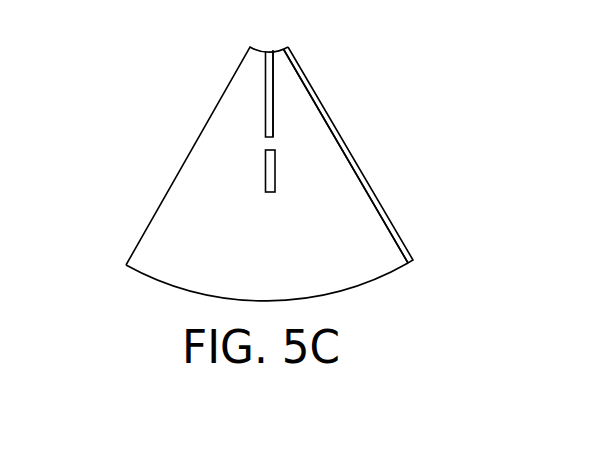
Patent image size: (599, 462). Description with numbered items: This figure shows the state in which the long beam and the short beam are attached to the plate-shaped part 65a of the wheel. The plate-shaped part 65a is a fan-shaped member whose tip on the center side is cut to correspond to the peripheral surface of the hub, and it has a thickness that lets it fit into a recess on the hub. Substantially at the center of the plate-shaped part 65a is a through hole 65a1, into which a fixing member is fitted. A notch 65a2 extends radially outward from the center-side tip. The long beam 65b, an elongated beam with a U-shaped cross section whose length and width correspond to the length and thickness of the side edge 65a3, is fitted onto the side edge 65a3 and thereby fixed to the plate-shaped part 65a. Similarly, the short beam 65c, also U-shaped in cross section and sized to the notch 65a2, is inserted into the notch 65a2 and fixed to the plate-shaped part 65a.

The plate-shaped part 65a is at (143, 246).
The through hole 65a1 is at (263, 172).
The notch 65a2 is at (263, 102).
The side edge 65a3 is at (397, 225).
The long beam 65b is at (370, 183).
The short beam 65c is at (275, 123).